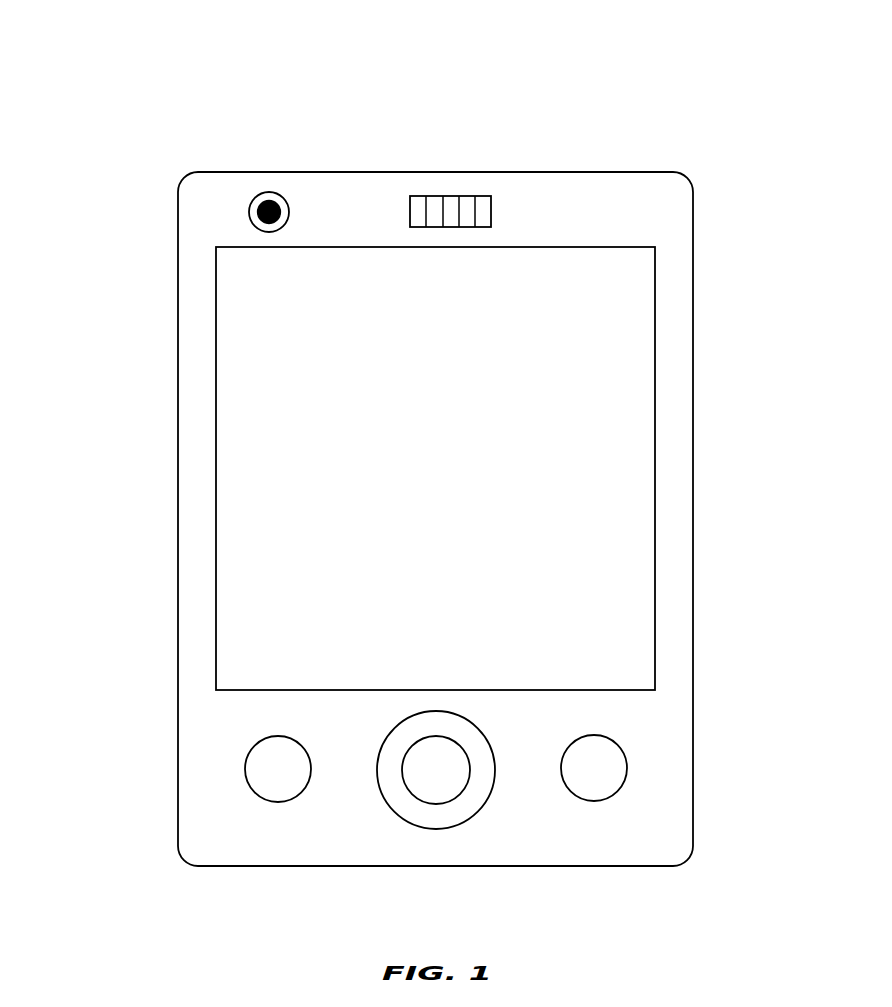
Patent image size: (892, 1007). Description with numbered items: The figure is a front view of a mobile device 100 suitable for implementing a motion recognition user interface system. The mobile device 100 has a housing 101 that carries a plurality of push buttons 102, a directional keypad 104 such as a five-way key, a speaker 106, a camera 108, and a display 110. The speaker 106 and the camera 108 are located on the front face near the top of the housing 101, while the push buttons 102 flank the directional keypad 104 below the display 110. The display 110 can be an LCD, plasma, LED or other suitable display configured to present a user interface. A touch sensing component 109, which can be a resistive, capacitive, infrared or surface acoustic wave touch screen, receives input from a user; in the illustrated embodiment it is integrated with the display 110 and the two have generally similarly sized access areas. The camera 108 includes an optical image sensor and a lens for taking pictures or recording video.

The mobile device 100 is at (692, 117).
The housing 101 is at (673, 707).
The push buttons 102 is at (245, 766).
The directional keypad 104 is at (473, 815).
The speaker 106 is at (450, 196).
The camera 108 is at (269, 192).
The touch sensing component 109 is at (654, 468).
The display 110 is at (626, 380).